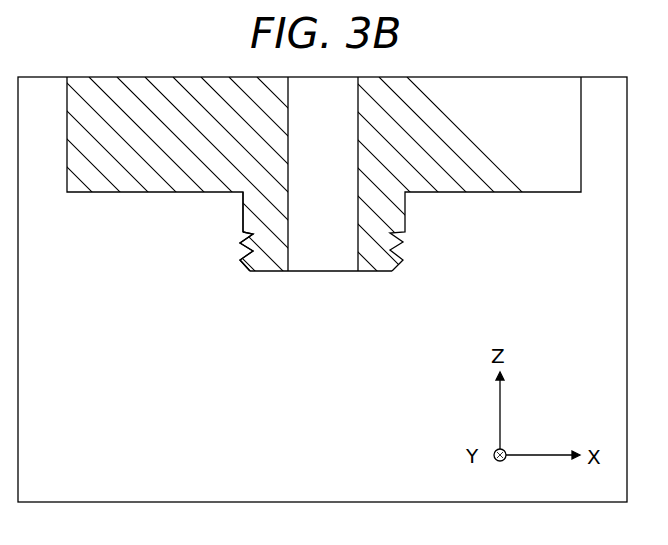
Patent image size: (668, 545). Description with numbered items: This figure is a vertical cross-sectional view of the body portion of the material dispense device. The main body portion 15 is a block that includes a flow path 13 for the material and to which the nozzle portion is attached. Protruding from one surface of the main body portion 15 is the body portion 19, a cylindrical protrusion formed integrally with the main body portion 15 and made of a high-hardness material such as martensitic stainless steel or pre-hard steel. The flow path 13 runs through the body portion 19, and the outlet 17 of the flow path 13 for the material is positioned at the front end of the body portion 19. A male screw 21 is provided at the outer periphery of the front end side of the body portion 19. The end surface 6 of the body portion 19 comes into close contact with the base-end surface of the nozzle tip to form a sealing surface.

The end surface 6 is at (373, 273).
The flow path 13 is at (323, 260).
The main body portion 15 is at (88, 193).
The outlet 17 is at (305, 273).
The body portion 19 is at (242, 214).
The male screw 21 is at (239, 254).